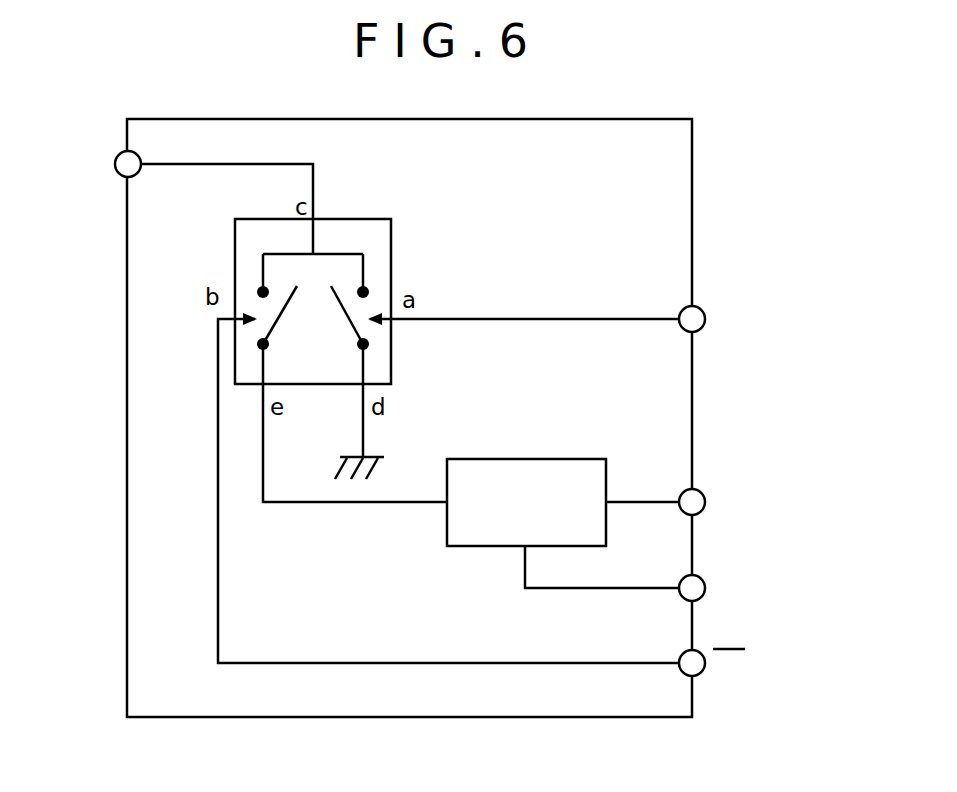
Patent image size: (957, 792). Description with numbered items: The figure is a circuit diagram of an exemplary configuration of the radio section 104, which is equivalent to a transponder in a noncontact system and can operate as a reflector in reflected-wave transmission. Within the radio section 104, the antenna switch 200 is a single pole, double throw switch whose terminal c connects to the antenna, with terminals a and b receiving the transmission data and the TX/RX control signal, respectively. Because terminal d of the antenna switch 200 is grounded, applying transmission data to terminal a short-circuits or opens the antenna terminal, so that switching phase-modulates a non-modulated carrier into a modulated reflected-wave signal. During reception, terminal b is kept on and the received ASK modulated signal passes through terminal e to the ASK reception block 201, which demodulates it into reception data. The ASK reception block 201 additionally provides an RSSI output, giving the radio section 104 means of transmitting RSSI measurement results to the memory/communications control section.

The radio section 104 is at (692, 220).
The antenna switch 200 is at (368, 220).
The ASK reception block 201 is at (532, 459).